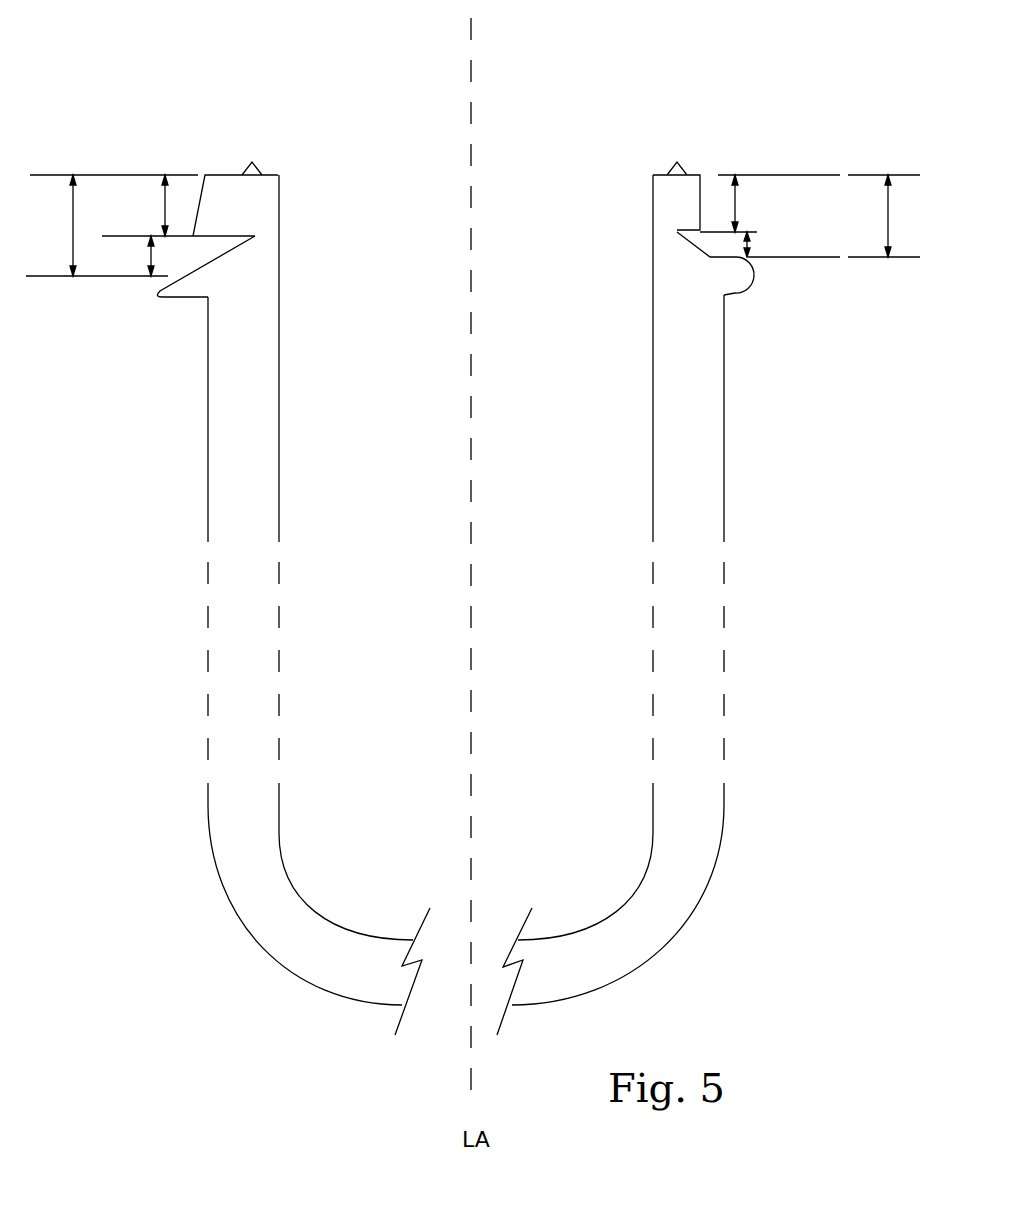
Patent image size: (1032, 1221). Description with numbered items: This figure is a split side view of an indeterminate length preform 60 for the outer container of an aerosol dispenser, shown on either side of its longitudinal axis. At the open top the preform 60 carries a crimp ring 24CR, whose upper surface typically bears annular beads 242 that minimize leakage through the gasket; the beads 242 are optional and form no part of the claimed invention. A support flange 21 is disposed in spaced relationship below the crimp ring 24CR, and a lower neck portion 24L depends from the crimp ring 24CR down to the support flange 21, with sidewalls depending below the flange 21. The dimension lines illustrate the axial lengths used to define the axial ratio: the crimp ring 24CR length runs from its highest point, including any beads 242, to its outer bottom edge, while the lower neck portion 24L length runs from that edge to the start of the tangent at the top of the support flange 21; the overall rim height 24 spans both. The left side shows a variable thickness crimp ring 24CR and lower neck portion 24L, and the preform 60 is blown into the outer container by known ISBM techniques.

The support flange 21 is at (188, 290).
The rim 24 is at (485, 225).
The crimp ring 24CR is at (167, 207).
The lower neck portion 24L is at (148, 258).
The annular beads 242 is at (252, 162).
The preform 60 is at (837, 645).